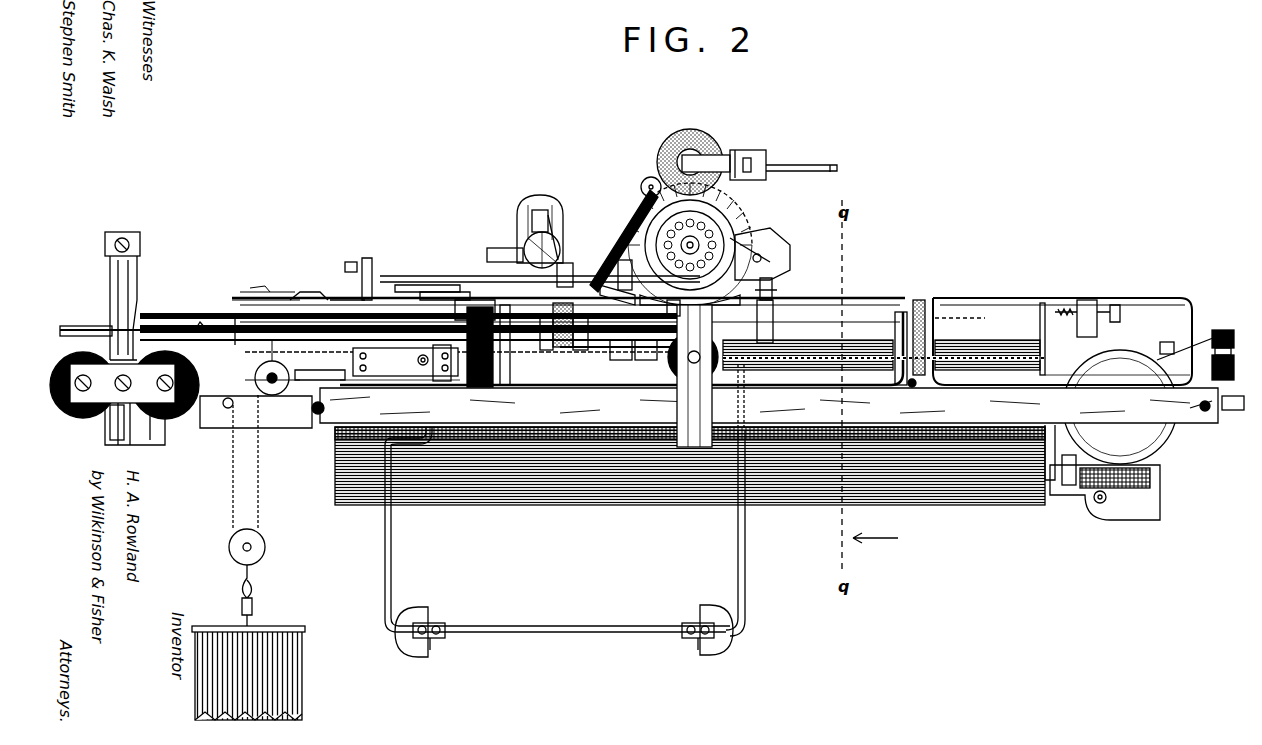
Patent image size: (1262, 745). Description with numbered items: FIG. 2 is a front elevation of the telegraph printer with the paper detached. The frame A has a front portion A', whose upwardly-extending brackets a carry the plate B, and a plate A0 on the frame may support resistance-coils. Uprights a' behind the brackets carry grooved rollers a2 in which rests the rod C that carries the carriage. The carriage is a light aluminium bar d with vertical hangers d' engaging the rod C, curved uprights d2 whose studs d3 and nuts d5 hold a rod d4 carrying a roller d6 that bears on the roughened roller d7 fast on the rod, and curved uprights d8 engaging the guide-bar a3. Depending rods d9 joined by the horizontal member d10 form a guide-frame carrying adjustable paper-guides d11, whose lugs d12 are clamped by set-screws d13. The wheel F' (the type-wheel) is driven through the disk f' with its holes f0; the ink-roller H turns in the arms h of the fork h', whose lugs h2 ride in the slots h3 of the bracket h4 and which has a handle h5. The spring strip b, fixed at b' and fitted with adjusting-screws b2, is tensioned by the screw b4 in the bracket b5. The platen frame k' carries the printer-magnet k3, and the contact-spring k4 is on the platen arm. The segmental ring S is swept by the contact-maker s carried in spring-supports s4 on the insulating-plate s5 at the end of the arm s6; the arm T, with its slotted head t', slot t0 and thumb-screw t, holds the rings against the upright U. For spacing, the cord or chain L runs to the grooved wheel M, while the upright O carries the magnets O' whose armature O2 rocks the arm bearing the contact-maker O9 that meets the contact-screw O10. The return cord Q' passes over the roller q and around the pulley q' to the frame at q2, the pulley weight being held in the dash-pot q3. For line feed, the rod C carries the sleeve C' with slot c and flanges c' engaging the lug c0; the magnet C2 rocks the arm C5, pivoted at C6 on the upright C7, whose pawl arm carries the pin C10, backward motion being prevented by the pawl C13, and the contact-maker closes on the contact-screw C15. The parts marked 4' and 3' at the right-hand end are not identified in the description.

The frame A is at (722, 421).
The plate A0 is at (965, 496).
The front portion of the frame A' is at (1198, 426).
The plate B is at (825, 322).
The rod C is at (517, 302).
The sleeve C' is at (415, 319).
The cord or chain L is at (985, 352).
The contact-screw C15 is at (140, 246).
The upright C7 is at (134, 302).
The pin or lug C10 is at (113, 282).
The pawl C13 is at (112, 290).
The electromagnet C2 is at (85, 329).
The rocking arm C5 is at (130, 443).
The pivot C6 is at (117, 442).
The lug c0 is at (200, 332).
The longitudinal slot c is at (147, 346).
The flanges c' is at (246, 339).
The roller q is at (261, 374).
The attachment point q2 is at (230, 430).
The cord Q' is at (472, 419).
The pulley q' is at (263, 578).
The dash-pot q3 is at (272, 628).
The securing point b' is at (266, 294).
The adjusting-screws b2 is at (320, 302).
The nuts d5 is at (346, 268).
The screw-threaded studs d3 is at (368, 275).
The curved uprights d8 is at (472, 276).
The rod d4 is at (430, 290).
The spring retaining-strip b is at (445, 278).
The brackets a is at (705, 286).
The upright U is at (541, 205).
The arm T is at (527, 245).
The head of the arm t' is at (523, 205).
The slot t0 is at (556, 245).
The thumb-screw t is at (504, 246).
The roller d6 is at (567, 263).
The insulating-plate s5 is at (628, 262).
The arm s6 is at (636, 210).
The roller-contact maker s is at (650, 180).
The spring-supports s4 is at (646, 195).
The ink-roller H is at (690, 150).
The arms of the fork h is at (706, 149).
The fork h' is at (743, 143).
The lugs h2 is at (750, 163).
The vertical slots h3 is at (760, 160).
The supporting-bracket h4 is at (790, 166).
The rod or handle h5 is at (830, 176).
The segmental ring S is at (722, 225).
The grinding wheel F' is at (730, 245).
The apertures f0 is at (735, 232).
The disk f' is at (786, 241).
The curved uprights d2 is at (776, 300).
The carriage-bar d is at (500, 380).
The uprights a' is at (679, 345).
The rollers a2 is at (490, 390).
The vertical hangers d' is at (636, 360).
The roughened roller d7 is at (562, 350).
The electromagnet k3 is at (700, 380).
The contact-spring k4 is at (748, 400).
The frame k' is at (704, 310).
The screw b4 is at (623, 329).
The bracket b5 is at (647, 329).
The depending rods d9 is at (393, 545).
The horizontal member d10 is at (563, 617).
The paper-guides d11 is at (420, 620).
The lugs d12 is at (440, 623).
The set-screws d13 is at (430, 640).
The upright O is at (1110, 425).
The electromagnets O' is at (1119, 504).
The armature O2 is at (1068, 485).
The wheel M is at (1048, 460).
The spring contact-maker O9 is at (1045, 330).
The contact-screw O10 is at (1078, 300).
The guide-bar a3 is at (1122, 378).
The lever 4' is at (1185, 326).
The block 3' is at (1223, 335).